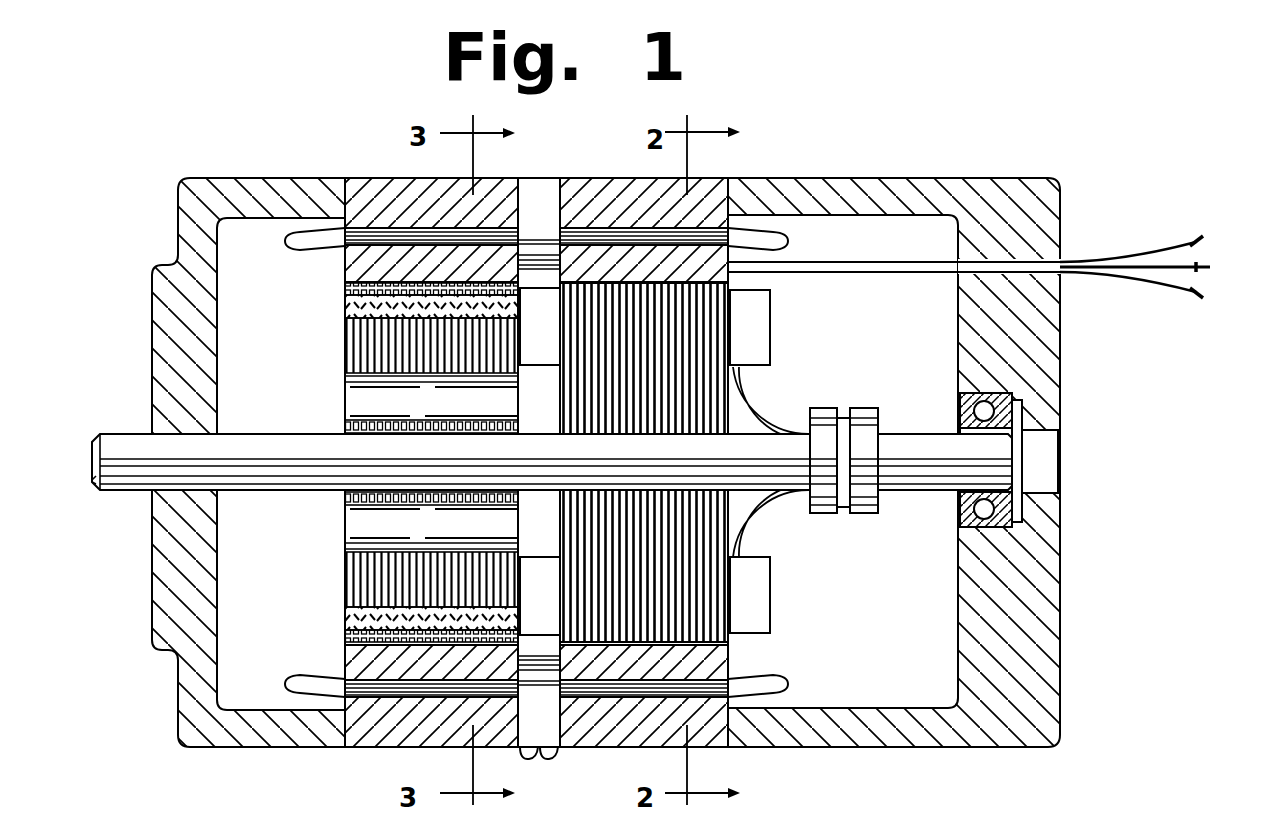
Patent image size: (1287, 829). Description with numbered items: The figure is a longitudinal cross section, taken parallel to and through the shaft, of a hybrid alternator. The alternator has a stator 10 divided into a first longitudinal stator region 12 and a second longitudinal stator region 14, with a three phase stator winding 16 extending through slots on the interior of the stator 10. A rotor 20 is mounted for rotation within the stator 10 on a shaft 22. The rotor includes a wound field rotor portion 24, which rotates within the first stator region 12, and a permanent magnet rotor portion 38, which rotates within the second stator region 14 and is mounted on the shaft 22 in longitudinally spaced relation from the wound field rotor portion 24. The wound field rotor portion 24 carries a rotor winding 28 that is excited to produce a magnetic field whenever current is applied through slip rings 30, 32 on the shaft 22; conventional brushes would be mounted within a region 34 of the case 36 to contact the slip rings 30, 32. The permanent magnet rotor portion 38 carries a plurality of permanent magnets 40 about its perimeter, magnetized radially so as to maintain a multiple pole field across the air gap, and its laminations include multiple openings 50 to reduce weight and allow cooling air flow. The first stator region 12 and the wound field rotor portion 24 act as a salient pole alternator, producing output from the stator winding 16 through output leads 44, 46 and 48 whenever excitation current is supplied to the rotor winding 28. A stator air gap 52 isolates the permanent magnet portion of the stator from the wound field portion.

The stator 10 is at (346, 136).
The first longitudinal stator region 12 is at (622, 178).
The second longitudinal stator region 14 is at (380, 178).
The three phase stator winding 16 is at (300, 252).
The rotor 20 is at (372, 462).
The shaft 22 is at (242, 494).
The wound field rotor portion 24 is at (740, 385).
The rotor winding 28 is at (765, 325).
The slip ring 30 is at (822, 514).
The slip ring 32 is at (872, 514).
The region 34 is at (889, 326).
The case 36 is at (1061, 372).
The permanent magnet rotor portion 38 is at (345, 352).
The permanent magnets 40 is at (345, 307).
The output lead 44 is at (1193, 244).
The output lead 46 is at (1200, 262).
The output lead 48 is at (1197, 300).
The openings 50 is at (385, 402).
The stator air gap 52 is at (530, 757).